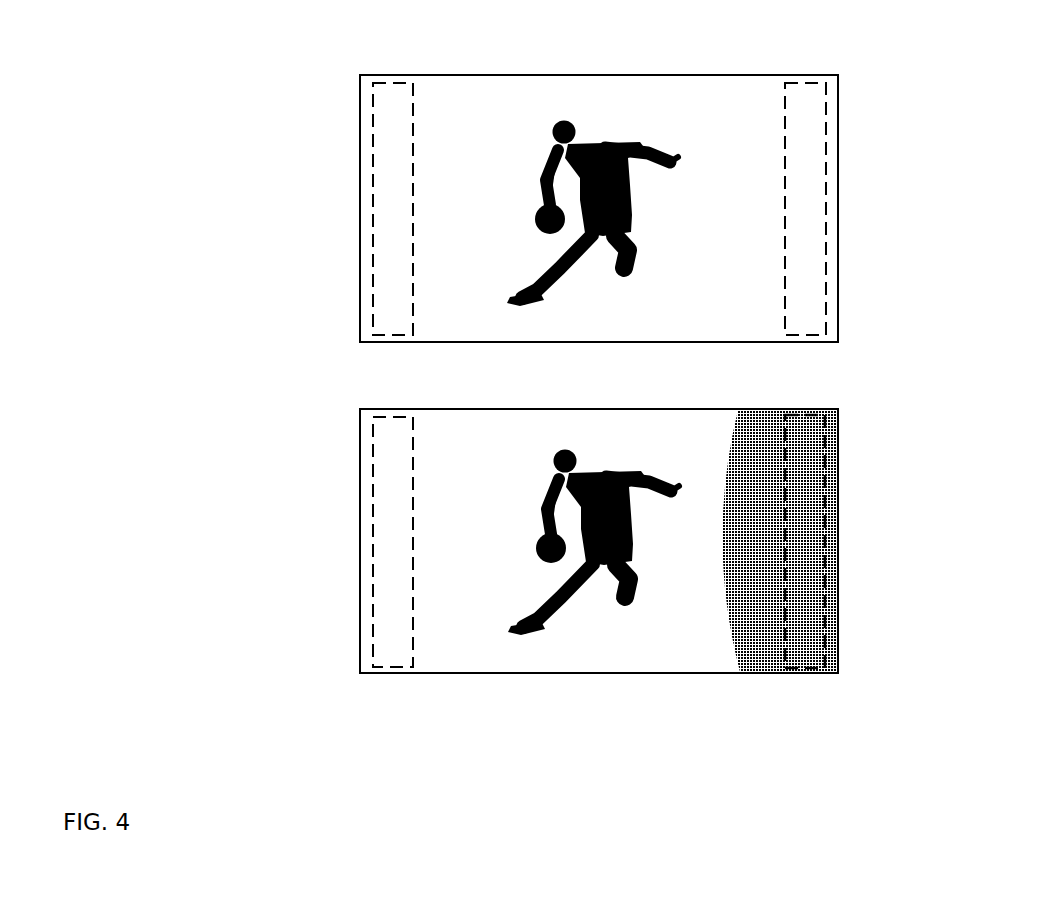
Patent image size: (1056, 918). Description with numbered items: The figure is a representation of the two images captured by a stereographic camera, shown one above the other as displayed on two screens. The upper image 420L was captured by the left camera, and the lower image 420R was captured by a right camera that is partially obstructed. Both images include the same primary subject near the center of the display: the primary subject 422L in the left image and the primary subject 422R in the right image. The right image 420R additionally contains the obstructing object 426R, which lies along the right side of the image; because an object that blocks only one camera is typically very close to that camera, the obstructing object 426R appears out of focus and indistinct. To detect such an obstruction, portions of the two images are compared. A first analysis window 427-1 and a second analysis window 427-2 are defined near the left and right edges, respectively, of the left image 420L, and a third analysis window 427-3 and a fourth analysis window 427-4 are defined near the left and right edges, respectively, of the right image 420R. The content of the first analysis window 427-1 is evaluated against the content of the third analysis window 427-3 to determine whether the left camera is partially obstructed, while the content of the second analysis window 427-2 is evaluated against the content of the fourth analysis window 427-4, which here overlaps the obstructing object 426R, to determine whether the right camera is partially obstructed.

The image captured by a left camera 420L is at (360, 164).
The image captured by a partially obstructed right camera 420R is at (360, 500).
The primary subject 422L is at (577, 122).
The primary subject 422R is at (574, 455).
The obstructing object 426R is at (730, 641).
The first analysis window 427-1 is at (373, 247).
The second analysis window 427-2 is at (825, 237).
The third analysis window 427-3 is at (373, 582).
The fourth analysis window 427-4 is at (825, 537).